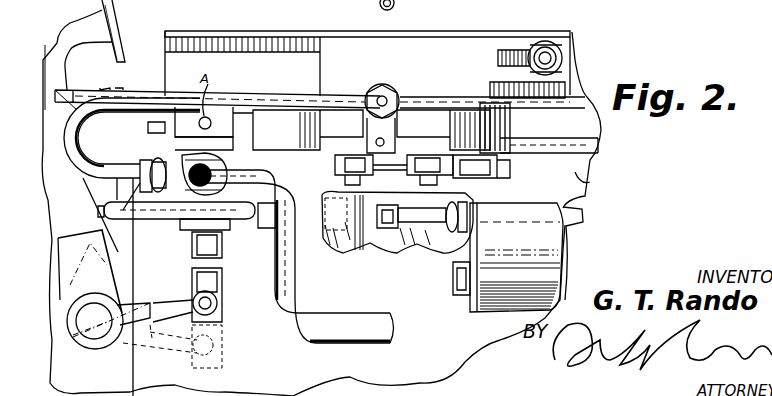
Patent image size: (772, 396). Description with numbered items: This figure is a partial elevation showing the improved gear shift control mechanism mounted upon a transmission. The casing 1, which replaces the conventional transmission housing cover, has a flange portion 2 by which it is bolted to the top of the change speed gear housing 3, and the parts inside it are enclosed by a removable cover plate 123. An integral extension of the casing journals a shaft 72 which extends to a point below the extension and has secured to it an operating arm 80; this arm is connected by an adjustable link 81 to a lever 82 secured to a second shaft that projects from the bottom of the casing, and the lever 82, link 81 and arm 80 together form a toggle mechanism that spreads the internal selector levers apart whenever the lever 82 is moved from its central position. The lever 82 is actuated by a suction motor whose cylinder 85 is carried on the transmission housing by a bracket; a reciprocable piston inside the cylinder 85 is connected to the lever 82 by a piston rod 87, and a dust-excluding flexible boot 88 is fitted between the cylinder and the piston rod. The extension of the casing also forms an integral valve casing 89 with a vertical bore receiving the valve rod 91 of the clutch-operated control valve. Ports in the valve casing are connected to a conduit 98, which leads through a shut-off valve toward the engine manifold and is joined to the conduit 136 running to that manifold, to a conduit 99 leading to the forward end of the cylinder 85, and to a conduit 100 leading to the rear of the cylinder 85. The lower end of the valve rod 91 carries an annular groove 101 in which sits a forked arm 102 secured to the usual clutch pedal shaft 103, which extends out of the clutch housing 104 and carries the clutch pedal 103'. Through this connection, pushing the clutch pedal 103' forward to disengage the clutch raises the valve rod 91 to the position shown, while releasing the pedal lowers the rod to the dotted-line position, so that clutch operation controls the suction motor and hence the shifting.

The casing 1 is at (567, 54).
The flange portion 2 is at (597, 147).
The change speed gear housing 3 is at (583, 180).
The shaft 72 is at (473, 180).
The operating arm 80 is at (500, 185).
The adjustable link 81 is at (410, 168).
The lever 82 is at (340, 168).
The cylinder 85 is at (487, 312).
The piston rod 87 is at (340, 248).
The flexible boot 88 is at (407, 252).
The valve casing 89 is at (180, 147).
The valve rod 91 is at (220, 253).
The conduit 98 is at (95, 178).
The conduit 99 is at (140, 225).
The conduit 100 is at (277, 312).
The annular groove 101 is at (218, 303).
The forked arm 102 is at (173, 302).
The clutch pedal shaft 103 is at (108, 336).
The clutch pedal 103' is at (140, 267).
The clutch housing 104 is at (92, 140).
The cover plate 123 is at (490, 32).
The conduit 136 is at (124, 94).